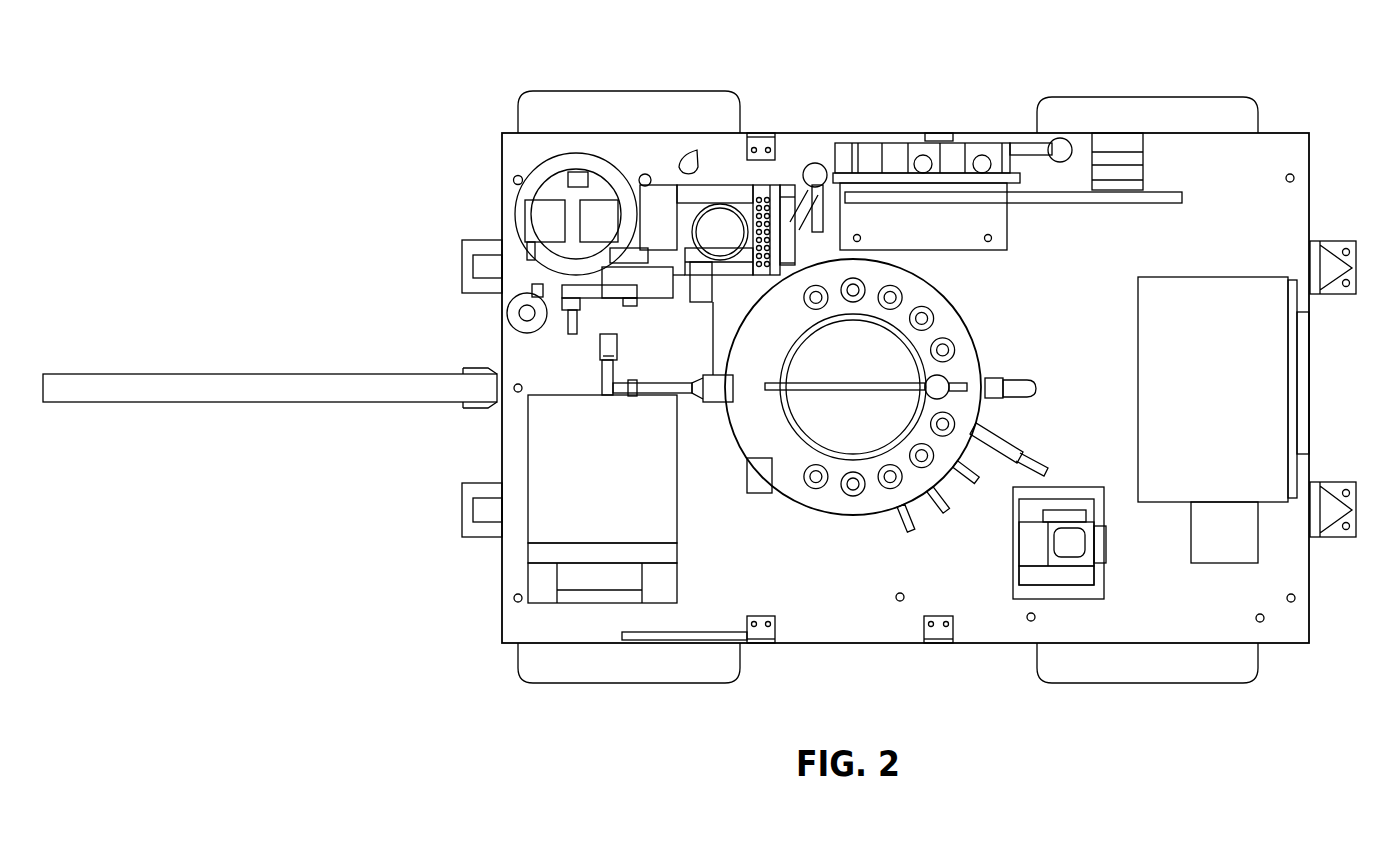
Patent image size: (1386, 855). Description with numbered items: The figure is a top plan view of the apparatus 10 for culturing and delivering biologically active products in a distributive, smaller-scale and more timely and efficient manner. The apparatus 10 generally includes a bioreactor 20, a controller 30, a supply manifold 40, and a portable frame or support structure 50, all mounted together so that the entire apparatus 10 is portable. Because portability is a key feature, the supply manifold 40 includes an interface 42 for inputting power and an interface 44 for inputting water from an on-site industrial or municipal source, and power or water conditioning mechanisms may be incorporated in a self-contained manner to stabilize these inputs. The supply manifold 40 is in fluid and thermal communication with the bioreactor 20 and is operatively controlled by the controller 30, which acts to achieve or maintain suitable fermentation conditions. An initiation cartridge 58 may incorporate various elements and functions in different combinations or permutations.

The apparatus 10 is at (445, 688).
The bioreactor 20 is at (853, 517).
The controller 30 is at (575, 496).
The supply manifold 40 is at (968, 88).
The power interface 42 is at (1232, 380).
The water interface 44 is at (490, 285).
The portable frame or support structure 50 is at (1217, 185).
The initiation cartridge 58 is at (1105, 618).